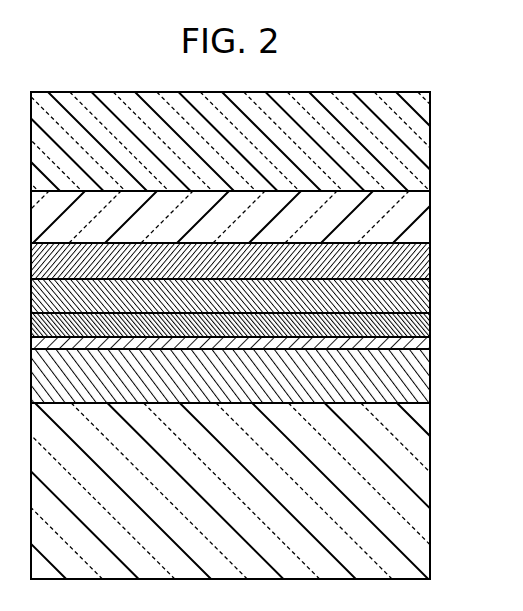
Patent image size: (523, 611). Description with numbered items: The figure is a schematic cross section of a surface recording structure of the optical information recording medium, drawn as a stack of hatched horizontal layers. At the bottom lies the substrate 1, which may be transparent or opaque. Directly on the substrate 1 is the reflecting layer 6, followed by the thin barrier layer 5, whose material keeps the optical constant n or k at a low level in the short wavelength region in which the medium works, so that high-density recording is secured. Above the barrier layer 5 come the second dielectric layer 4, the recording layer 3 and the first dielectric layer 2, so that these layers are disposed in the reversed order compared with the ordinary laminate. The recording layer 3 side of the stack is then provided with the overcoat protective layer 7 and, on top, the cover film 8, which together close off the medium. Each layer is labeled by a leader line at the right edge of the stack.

The substrate 1 is at (424, 529).
The first dielectric layer 2 is at (424, 271).
The recording layer 3 is at (424, 296).
The second dielectric layer 4 is at (424, 329).
The barrier layer 5 is at (424, 349).
The reflecting layer 6 is at (424, 376).
The overcoat protective layer 7 is at (424, 229).
The cover film 8 is at (424, 167).